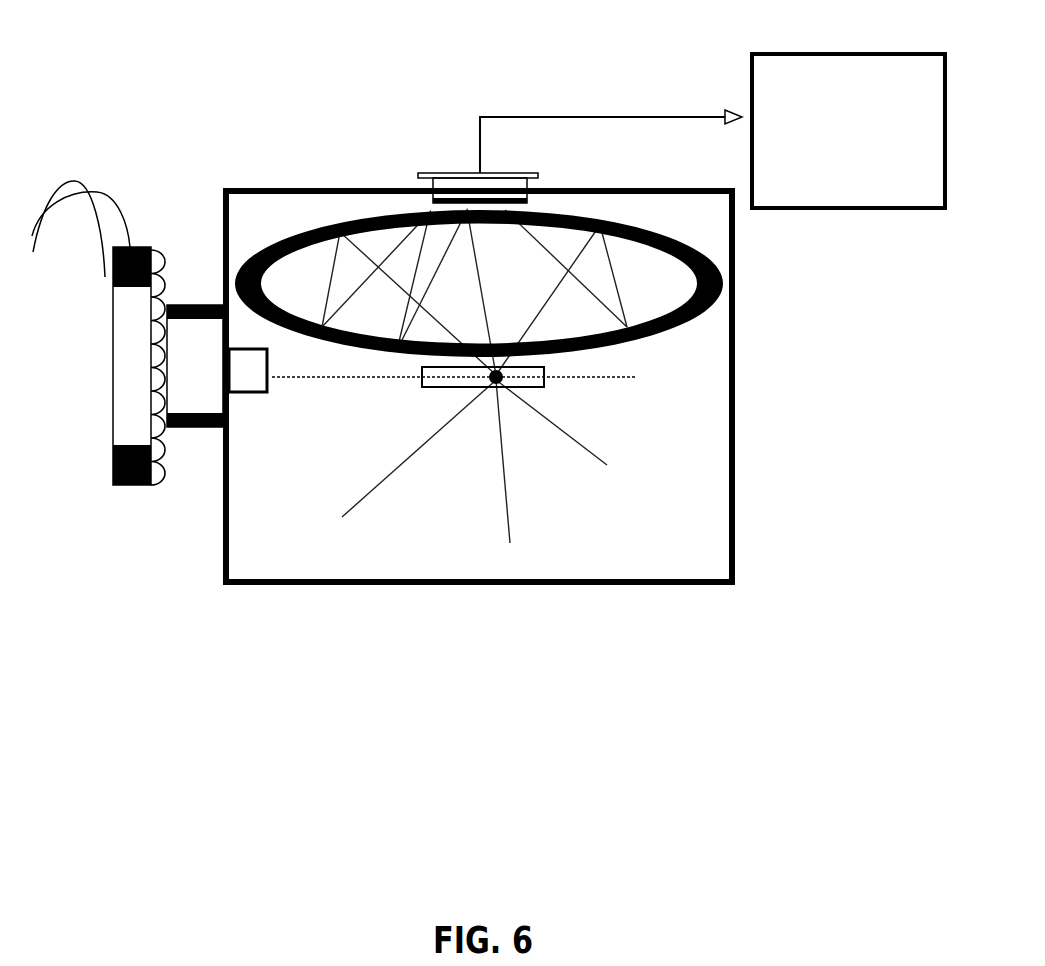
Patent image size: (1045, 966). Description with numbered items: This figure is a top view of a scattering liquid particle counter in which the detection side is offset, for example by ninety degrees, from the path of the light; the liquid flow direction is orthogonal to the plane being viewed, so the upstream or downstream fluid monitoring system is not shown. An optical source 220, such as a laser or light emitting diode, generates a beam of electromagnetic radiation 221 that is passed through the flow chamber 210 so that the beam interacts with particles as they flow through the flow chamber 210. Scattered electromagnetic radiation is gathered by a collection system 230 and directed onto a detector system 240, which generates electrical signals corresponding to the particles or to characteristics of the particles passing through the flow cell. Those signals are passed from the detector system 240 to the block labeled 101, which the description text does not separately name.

The controller / computer 101 is at (848, 131).
The flow chamber 210 is at (478, 404).
The optical source 220 is at (147, 512).
The beam of electromagnetic radiation 221 is at (308, 388).
The collection system 230 is at (445, 209).
The detector system 240 is at (452, 153).